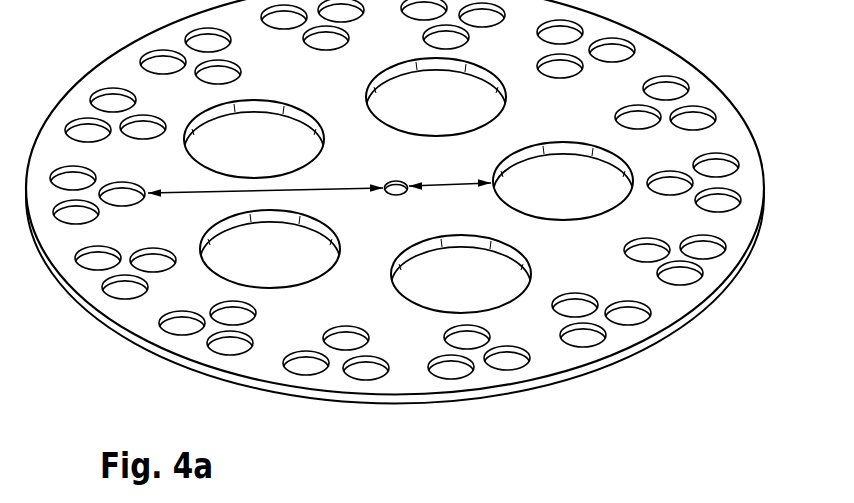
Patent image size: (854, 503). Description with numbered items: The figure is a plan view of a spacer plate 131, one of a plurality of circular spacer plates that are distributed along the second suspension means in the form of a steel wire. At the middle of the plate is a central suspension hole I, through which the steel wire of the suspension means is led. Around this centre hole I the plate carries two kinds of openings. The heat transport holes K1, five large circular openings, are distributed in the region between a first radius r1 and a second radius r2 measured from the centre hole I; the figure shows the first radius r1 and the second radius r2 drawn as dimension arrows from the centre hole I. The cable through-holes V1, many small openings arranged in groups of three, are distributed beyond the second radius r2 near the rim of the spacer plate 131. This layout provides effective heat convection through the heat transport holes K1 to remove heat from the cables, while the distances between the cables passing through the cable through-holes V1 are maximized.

The spacer plate 131 is at (407, 377).
The heat transport holes K1 is at (268, 156).
The cable through-holes V1 is at (233, 318).
The central suspension hole I is at (391, 181).
The first radius r1 is at (458, 184).
The second radius r2 is at (338, 191).